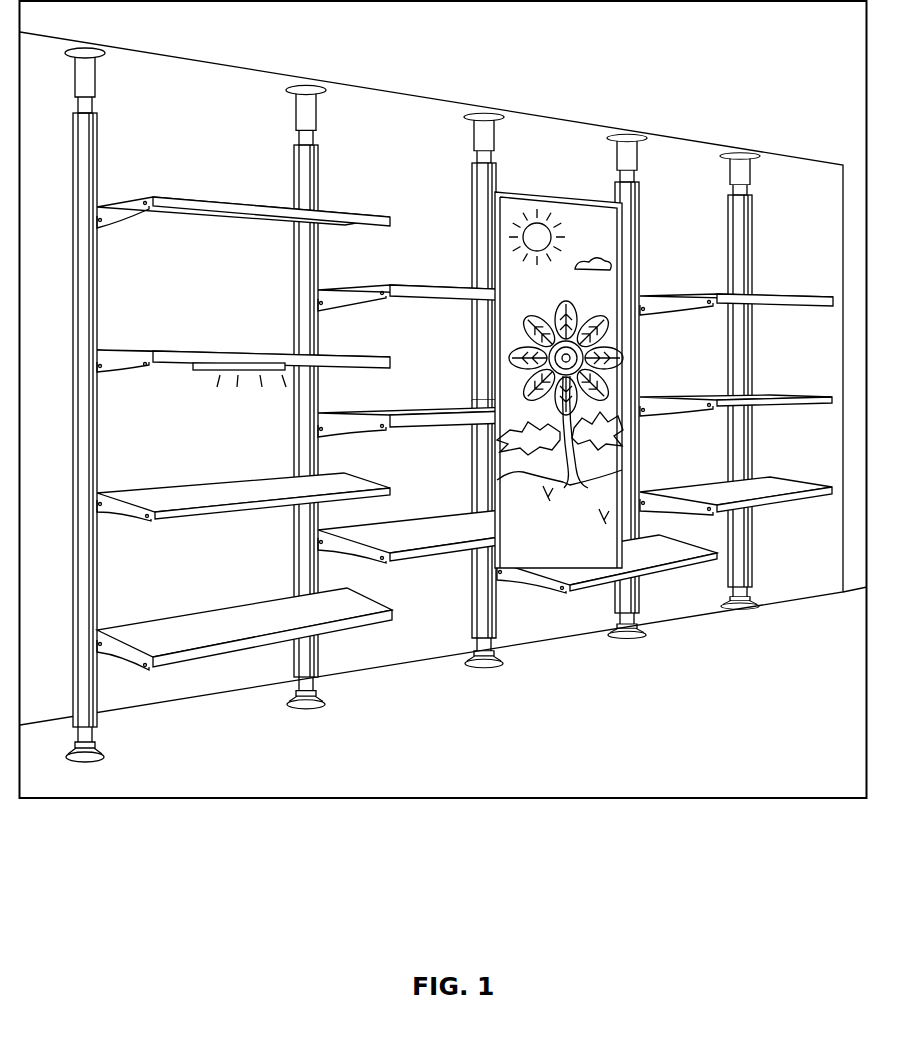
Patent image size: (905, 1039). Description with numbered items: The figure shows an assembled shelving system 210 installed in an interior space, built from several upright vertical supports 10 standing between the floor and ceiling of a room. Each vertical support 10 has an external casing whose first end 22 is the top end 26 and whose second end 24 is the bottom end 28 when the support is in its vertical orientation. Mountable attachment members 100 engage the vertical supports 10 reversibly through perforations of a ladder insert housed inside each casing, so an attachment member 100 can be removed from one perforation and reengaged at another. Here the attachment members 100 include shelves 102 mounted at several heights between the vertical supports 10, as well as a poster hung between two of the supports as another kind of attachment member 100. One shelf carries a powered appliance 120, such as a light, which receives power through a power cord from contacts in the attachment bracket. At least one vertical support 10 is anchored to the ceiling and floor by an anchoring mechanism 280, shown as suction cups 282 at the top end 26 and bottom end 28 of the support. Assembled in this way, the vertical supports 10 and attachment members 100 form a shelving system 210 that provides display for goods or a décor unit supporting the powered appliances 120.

The vertical support 10 is at (97, 162).
The first end 22 is at (497, 167).
The second end 24 is at (497, 640).
The top end 26 is at (316, 146).
The bottom end 28 is at (318, 690).
The mountable attachment member 100 is at (198, 515).
The shelf 102 is at (820, 404).
The powered appliance 120 is at (208, 374).
The shelving system 210 is at (488, 680).
The anchoring mechanism 280 is at (110, 48).
The suction cup 282 is at (754, 157).